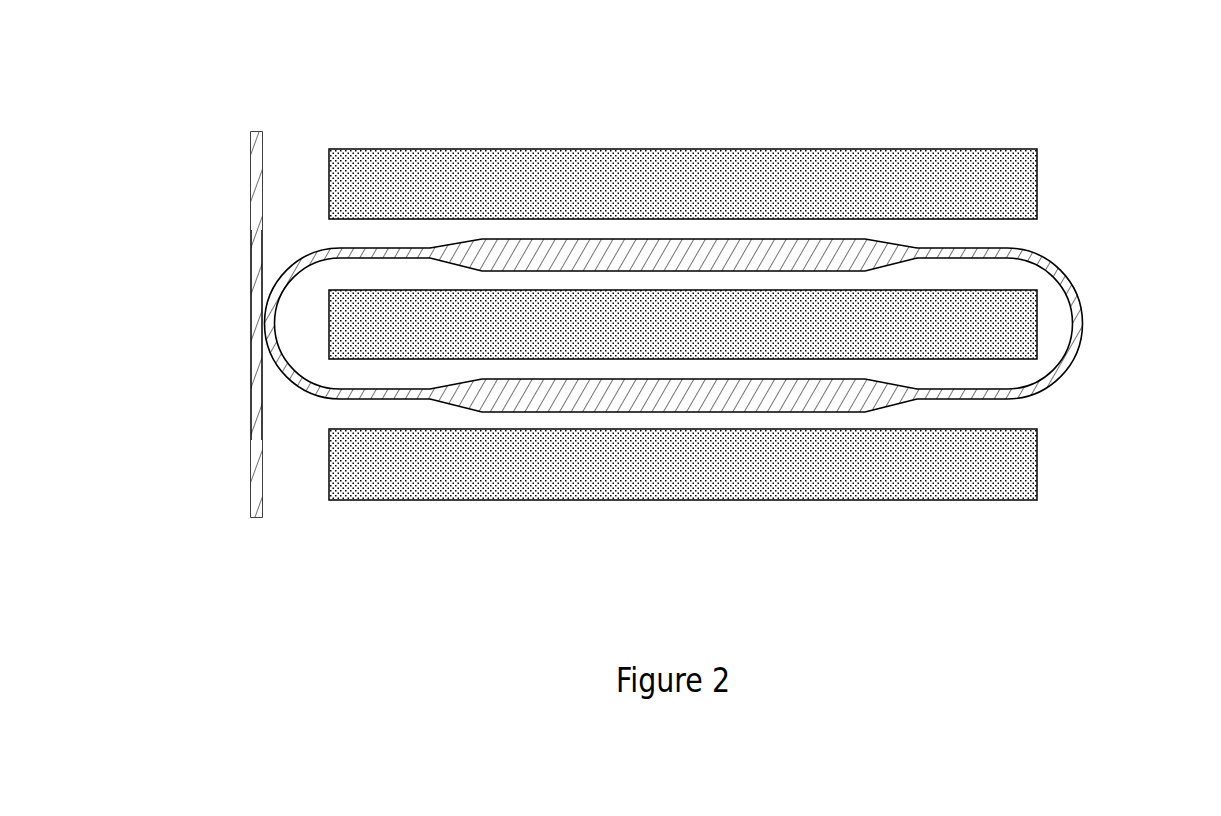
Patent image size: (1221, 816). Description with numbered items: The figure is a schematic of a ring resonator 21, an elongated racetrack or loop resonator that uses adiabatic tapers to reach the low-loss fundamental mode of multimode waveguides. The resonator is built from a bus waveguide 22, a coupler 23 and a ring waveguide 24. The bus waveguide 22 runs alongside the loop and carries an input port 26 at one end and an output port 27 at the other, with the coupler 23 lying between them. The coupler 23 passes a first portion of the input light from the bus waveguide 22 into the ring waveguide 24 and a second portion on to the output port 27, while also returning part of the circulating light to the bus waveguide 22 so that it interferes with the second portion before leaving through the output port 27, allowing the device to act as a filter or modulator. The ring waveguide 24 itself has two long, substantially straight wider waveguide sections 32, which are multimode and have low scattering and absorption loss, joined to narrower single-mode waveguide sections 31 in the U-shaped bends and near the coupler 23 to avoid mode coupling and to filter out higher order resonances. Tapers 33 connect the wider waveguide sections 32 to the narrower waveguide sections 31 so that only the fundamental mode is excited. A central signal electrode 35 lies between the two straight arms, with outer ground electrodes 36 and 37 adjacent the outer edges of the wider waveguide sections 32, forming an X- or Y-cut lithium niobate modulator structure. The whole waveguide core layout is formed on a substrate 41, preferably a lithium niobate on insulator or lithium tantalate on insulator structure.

The ring resonator 21 is at (314, 79).
The bus waveguide 22 is at (251, 222).
The coupler 23 is at (236, 305).
The ring waveguide 24 is at (1108, 353).
The input port 26 is at (251, 143).
The output port 27 is at (251, 483).
The narrower waveguide sections 31 is at (300, 392).
The wider waveguide sections 32 is at (632, 240).
The tapers 33 is at (455, 245).
The central signal electrode 35 is at (1020, 325).
The outer ground electrode 36 is at (745, 172).
The outer ground electrode 37 is at (755, 487).
The substrate 41 is at (1129, 623).